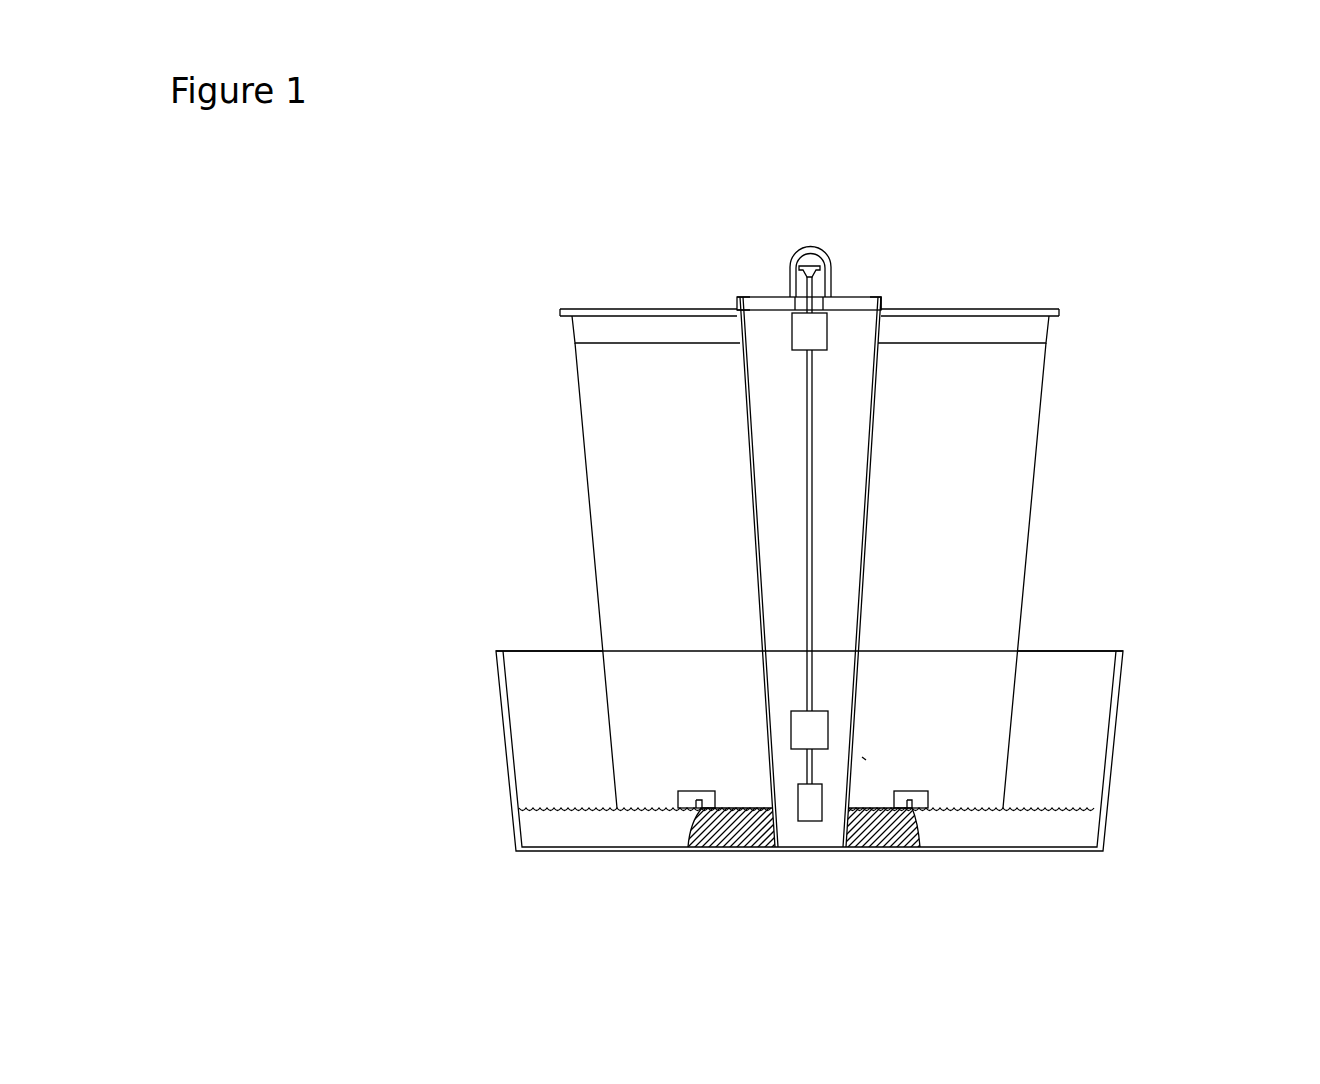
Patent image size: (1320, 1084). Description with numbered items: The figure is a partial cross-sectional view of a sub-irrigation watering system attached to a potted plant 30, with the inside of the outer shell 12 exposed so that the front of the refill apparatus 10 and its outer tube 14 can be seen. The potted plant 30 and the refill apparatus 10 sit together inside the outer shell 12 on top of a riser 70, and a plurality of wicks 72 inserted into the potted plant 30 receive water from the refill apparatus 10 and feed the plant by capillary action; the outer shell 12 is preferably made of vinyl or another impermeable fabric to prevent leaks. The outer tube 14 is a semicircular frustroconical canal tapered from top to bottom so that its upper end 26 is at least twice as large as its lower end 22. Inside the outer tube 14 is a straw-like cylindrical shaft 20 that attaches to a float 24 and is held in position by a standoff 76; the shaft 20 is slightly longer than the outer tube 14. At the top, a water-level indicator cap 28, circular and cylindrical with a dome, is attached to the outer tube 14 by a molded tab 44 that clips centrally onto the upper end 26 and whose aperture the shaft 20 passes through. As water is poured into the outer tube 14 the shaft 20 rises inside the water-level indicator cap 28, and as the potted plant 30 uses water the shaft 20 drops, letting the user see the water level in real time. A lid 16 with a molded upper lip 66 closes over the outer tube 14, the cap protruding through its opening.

The refill apparatus 10 is at (693, 600).
The outer shell 12 is at (503, 748).
The outer tube 14 is at (868, 565).
The lid 16 is at (855, 296).
The shaft 20 is at (805, 497).
The lower end 22 is at (862, 757).
The float 24 is at (808, 822).
The upper end 26 is at (881, 300).
The water-level indicator cap 28 is at (812, 248).
The potted plant 30 is at (1007, 308).
The molded tab 44 is at (790, 340).
The upper lip 66 is at (783, 296).
The riser 70 is at (880, 843).
The wicks 72 is at (913, 828).
The standoff 76 is at (775, 720).